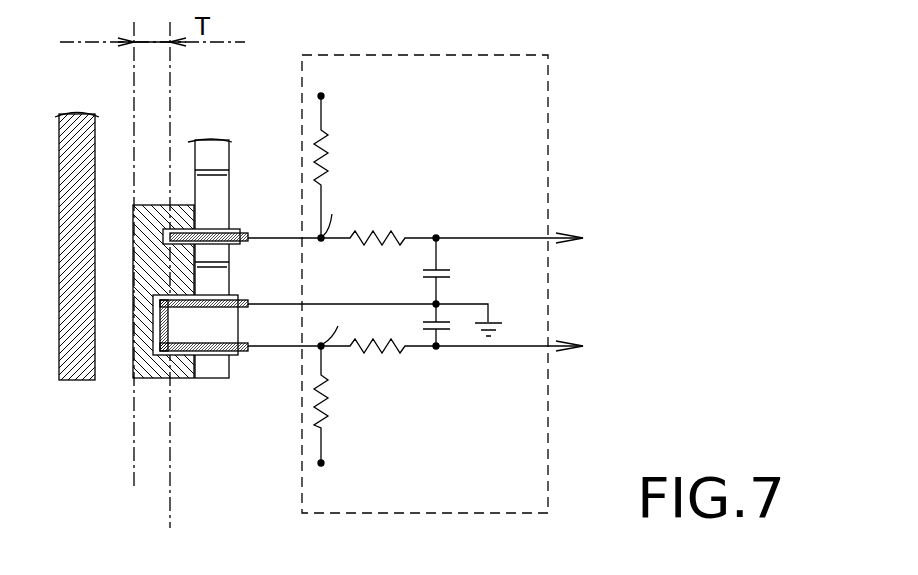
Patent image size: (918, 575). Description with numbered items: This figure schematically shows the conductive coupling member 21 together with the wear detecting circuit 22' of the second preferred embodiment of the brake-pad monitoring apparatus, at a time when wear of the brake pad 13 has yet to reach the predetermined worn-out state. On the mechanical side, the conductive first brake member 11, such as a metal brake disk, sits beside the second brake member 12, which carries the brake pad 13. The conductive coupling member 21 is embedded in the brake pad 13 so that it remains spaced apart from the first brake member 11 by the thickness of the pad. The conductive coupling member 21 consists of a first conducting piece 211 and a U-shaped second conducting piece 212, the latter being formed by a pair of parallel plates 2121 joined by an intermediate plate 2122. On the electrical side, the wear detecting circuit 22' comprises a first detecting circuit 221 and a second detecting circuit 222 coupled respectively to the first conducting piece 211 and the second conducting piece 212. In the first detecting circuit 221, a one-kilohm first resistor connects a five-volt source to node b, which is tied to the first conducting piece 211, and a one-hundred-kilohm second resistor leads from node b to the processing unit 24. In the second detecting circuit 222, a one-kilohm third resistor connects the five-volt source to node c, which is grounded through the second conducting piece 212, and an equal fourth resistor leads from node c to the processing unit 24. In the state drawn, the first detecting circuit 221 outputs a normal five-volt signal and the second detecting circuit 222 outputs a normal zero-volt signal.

The first brake member 11 is at (62, 190).
The second brake member 12 is at (222, 158).
The brake pad 13 is at (153, 205).
The conductive coupling member 21 is at (184, 315).
The first conducting piece 211 is at (193, 214).
The second conducting piece 212 is at (183, 344).
The parallel plates 2121 is at (203, 403).
The intermediate plate 2122 is at (152, 326).
The wear detecting circuit 22' is at (415, 262).
The first detecting circuit 221 is at (440, 155).
The second detecting circuit 222 is at (433, 413).
The processing unit 24 is at (723, 294).